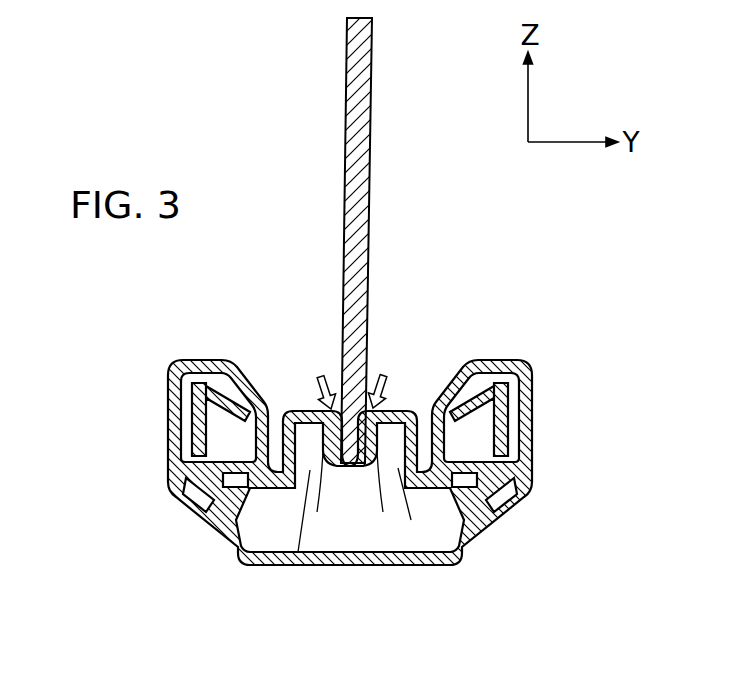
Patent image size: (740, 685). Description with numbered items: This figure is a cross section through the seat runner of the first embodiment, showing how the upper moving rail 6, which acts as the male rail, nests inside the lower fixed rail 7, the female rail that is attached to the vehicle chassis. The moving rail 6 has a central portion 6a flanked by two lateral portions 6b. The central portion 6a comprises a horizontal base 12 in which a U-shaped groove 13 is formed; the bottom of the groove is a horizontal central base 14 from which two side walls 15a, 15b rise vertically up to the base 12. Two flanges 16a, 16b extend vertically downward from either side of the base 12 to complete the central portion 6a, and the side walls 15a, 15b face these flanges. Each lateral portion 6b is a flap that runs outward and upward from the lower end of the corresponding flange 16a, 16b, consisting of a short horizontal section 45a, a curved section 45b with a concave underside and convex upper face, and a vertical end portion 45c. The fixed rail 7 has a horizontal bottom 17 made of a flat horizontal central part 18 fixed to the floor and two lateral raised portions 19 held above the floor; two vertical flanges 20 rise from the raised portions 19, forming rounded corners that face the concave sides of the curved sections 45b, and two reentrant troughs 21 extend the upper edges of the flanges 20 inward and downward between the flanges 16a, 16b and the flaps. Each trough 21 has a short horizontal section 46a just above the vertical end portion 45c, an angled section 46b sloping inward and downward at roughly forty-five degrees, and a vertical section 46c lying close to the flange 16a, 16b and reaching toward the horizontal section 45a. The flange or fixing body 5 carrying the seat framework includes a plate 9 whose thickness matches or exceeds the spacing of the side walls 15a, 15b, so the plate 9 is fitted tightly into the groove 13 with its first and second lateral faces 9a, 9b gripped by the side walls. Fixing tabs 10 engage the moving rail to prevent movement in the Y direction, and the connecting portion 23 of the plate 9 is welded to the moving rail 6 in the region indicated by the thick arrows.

The flange 5 is at (290, 60).
The moving rail 6 is at (424, 377).
The central portion 6a is at (276, 364).
The lateral portions 6b is at (522, 440).
The fixed rail 7 is at (372, 585).
The plate 9 is at (360, 165).
The first lateral face 9a is at (345, 230).
The second lateral face 9b is at (368, 230).
The fixing tabs 10 is at (368, 482).
The horizontal base 12 is at (396, 409).
The groove 13 is at (375, 495).
The horizontal central base 14 is at (318, 496).
The side wall 15a is at (298, 552).
The side wall 15b is at (420, 507).
The flange 16a is at (297, 489).
The flange 16b is at (462, 538).
The horizontal bottom 17 is at (461, 578).
The flat horizontal central part 18 is at (412, 563).
The lateral raised portions 19 is at (484, 518).
The vertical flanges 20 is at (532, 467).
The reentrant troughs 21 is at (472, 365).
The connecting portion 23 is at (376, 318).
The short horizontal section 45a is at (228, 520).
The curved section 45b is at (192, 503).
The vertical end portion 45c is at (180, 408).
The short horizontal section 46a is at (512, 364).
The angled section 46b is at (447, 385).
The vertical section 46c is at (520, 500).